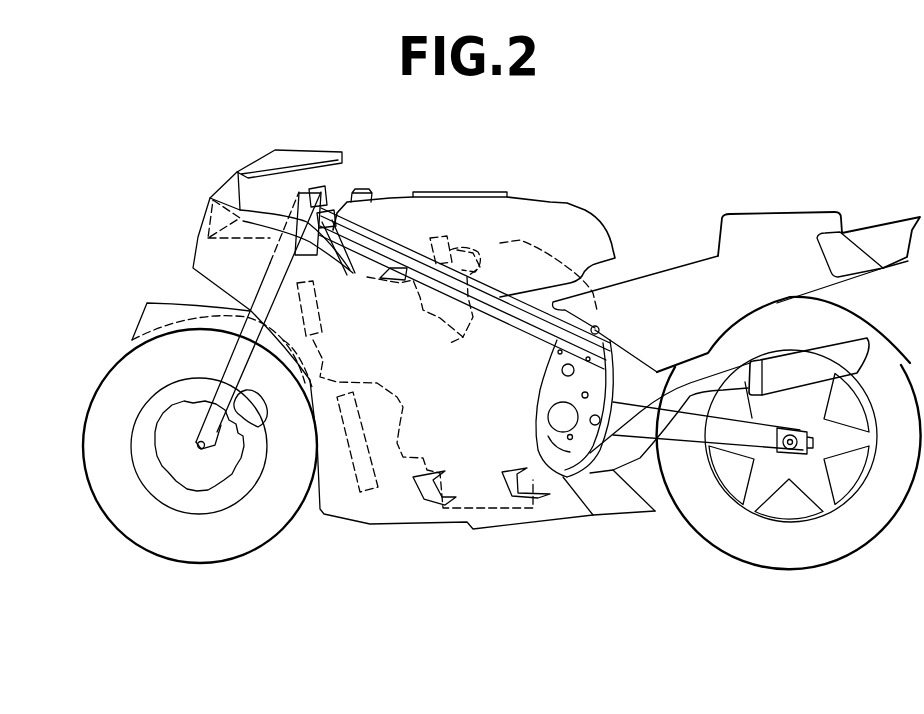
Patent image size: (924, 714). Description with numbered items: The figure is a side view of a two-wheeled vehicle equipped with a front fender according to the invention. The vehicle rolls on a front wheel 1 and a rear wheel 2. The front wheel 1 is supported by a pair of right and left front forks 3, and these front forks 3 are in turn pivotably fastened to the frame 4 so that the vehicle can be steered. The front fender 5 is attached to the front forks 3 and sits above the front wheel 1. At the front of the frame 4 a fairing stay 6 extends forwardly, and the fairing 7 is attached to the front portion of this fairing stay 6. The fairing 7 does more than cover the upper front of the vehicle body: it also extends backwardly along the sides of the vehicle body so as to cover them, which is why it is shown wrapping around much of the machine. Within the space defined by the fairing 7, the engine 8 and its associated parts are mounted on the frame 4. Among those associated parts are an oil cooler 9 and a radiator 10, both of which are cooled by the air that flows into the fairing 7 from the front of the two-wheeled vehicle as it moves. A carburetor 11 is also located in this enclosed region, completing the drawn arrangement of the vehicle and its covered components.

The front wheel 1 is at (125, 528).
The rear wheel 2 is at (705, 527).
The front forks 3 is at (231, 370).
The frame 4 is at (362, 232).
The front fender 5 is at (131, 310).
The fairing stay 6 is at (214, 236).
The fairing 7 is at (215, 260).
The engine 8 is at (322, 377).
The oil cooler 9 is at (320, 313).
The radiator 10 is at (346, 505).
The carburetor 11 is at (470, 258).